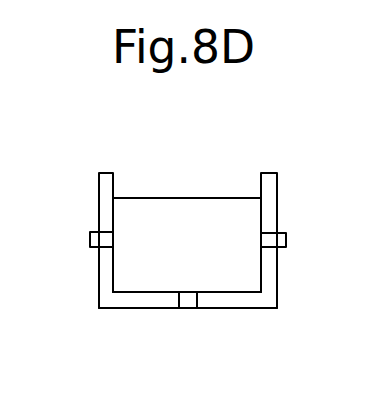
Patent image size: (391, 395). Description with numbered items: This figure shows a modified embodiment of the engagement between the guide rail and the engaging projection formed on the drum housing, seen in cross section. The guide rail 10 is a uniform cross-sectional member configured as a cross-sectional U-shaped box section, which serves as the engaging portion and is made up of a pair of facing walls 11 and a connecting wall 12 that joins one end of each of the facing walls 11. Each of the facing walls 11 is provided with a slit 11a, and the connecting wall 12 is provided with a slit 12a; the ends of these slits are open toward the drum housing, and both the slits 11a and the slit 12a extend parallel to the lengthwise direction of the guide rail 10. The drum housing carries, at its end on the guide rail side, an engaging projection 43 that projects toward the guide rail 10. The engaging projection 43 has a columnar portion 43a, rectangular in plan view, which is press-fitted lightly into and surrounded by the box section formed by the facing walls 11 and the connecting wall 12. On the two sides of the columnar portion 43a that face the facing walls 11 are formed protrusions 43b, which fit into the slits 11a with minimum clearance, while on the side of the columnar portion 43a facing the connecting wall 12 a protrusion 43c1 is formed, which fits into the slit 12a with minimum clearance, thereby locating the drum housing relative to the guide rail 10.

The guide rail 10 is at (275, 166).
The facing walls 11 is at (111, 203).
The slits 11a is at (109, 246).
The connecting wall 12 is at (253, 300).
The slit 12a is at (197, 300).
The engaging projection 43 is at (226, 188).
The columnar portion 43a is at (165, 208).
The protrusions 43b is at (91, 240).
The protrusion 43c1 is at (187, 294).